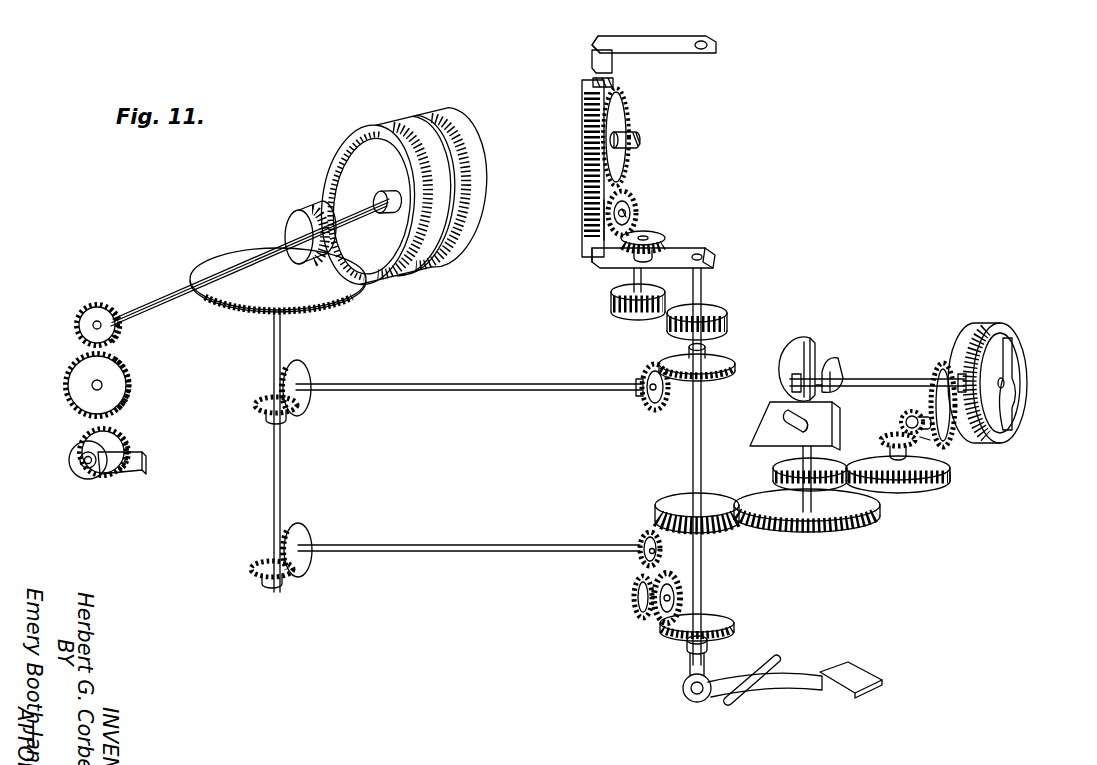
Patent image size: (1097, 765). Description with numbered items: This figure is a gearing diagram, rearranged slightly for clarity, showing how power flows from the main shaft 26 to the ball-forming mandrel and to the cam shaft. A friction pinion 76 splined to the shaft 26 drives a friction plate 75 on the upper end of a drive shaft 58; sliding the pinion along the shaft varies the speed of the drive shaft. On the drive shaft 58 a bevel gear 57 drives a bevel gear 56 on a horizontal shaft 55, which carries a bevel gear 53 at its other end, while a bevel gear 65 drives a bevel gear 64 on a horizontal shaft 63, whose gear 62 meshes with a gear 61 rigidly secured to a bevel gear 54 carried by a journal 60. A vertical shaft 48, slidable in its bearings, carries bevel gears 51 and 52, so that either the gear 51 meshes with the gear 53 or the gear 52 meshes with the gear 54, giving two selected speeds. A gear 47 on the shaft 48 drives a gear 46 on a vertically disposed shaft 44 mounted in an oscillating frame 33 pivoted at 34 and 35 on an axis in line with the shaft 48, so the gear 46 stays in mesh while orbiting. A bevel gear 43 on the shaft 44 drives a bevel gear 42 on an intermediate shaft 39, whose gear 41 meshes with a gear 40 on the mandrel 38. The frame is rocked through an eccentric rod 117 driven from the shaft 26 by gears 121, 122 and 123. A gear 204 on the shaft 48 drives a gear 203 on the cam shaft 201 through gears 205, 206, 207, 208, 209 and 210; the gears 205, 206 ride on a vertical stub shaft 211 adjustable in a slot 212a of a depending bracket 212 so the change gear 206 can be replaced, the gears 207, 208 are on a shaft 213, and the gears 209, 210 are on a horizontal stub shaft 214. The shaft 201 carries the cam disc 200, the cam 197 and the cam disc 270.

The shaft 26 is at (172, 300).
The oscillating frame 33 is at (590, 66).
The pivot 34 is at (713, 253).
The pivot 35 is at (712, 45).
The mandrel 38 is at (600, 153).
The intermediate shaft 39 is at (628, 213).
The gear 40 is at (614, 122).
The gear 41 is at (596, 226).
The bevel gear 42 is at (632, 207).
The bevel gear 43 is at (654, 242).
The vertically disposed shaft 44 is at (632, 274).
The gear 46 is at (633, 320).
The gear 47 is at (730, 314).
The vertical shaft 48 is at (704, 412).
The bevel gear 51 is at (715, 364).
The bevel gear 52 is at (712, 620).
The bevel gear 53 is at (645, 402).
The bevel gear 54 is at (680, 584).
The horizontal shaft 55 is at (470, 392).
The bevel gear 56 is at (306, 406).
The bevel gear 57 is at (262, 415).
The drive shaft 58 is at (283, 490).
The journal 60 is at (705, 600).
The gear 61 is at (636, 616).
The gear 62 is at (642, 540).
The horizontal shaft 63 is at (470, 554).
The bevel gear 64 is at (306, 540).
The bevel gear 65 is at (283, 582).
The friction plate 75 is at (322, 293).
The friction pinion 76 is at (284, 224).
The eccentric rod 117 is at (120, 465).
The gear 121 is at (78, 324).
The gear 122 is at (78, 392).
The gear 123 is at (72, 452).
The cam 197 is at (855, 352).
The cam disc 200 is at (1029, 382).
The cam shaft 201 is at (860, 378).
The gear 203 is at (940, 362).
The gear 204 is at (674, 492).
The gear 205 is at (862, 524).
The gear 206 is at (785, 470).
The gear 207 is at (936, 472).
The gear 208 is at (880, 436).
The gear 209 is at (904, 411).
The gear 210 is at (925, 440).
The vertical stub shaft 211 is at (817, 508).
The depending bracket 212 is at (838, 358).
The slot 212a is at (787, 420).
The shaft 213 is at (950, 472).
The horizontal stub shaft 214 is at (925, 437).
The cam disc 270 is at (804, 336).